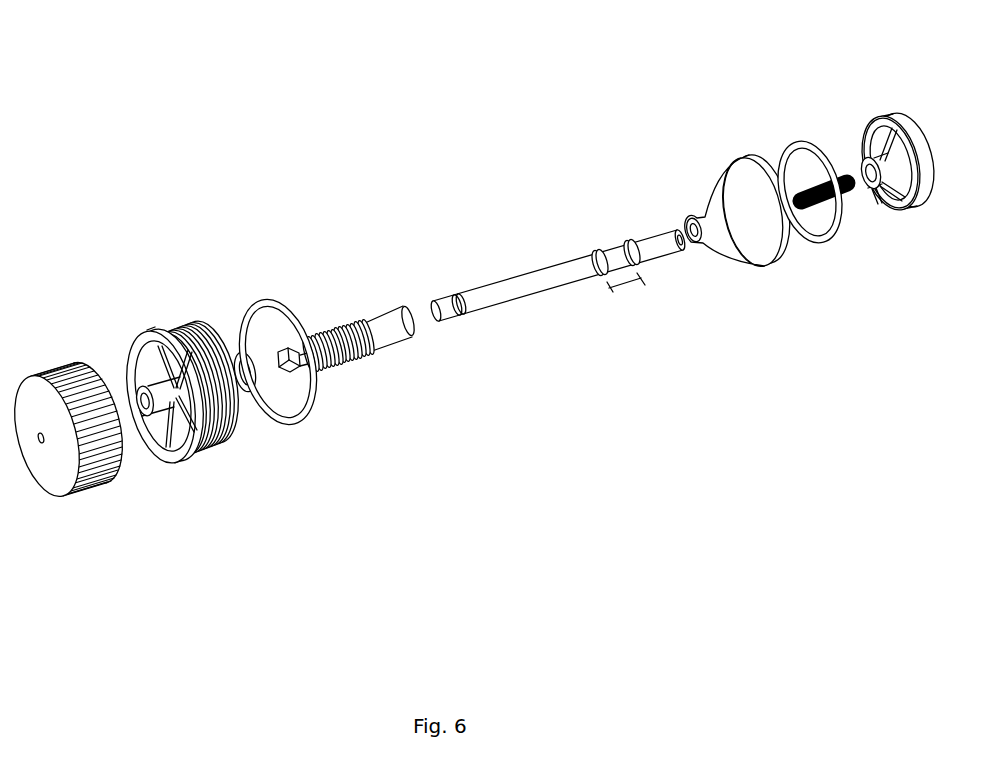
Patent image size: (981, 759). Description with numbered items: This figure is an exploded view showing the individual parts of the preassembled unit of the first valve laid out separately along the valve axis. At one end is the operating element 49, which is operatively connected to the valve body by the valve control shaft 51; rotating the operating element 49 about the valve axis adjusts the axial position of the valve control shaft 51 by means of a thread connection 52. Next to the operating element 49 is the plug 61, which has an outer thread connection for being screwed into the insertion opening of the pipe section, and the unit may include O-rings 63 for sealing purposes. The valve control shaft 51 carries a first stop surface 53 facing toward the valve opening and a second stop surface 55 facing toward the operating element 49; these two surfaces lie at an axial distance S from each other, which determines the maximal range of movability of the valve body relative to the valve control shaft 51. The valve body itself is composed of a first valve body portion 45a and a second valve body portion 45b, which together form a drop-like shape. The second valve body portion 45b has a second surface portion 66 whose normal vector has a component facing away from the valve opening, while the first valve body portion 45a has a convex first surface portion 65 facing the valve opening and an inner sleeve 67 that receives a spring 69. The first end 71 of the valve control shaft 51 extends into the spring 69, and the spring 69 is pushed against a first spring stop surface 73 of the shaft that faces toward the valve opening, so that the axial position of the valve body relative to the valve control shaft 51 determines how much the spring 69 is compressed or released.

The operating element 49 is at (57, 368).
The plug 61 is at (165, 331).
The O-rings 63 is at (235, 357).
The thread connection 52 is at (337, 357).
The valve control shaft 51 is at (500, 292).
The first stop surface 53 is at (602, 248).
The second stop surface 55 is at (617, 240).
The first spring stop surface 73 is at (635, 242).
The first end 71 is at (683, 243).
The axial distance S is at (627, 285).
The second valve body portion 45b is at (731, 202).
The second surface portion 66 is at (727, 250).
The first valve body portion 45a is at (847, 175).
The spring 69 is at (847, 192).
The convex first surface portion 65 is at (897, 179).
The inner sleeve 67 is at (892, 177).